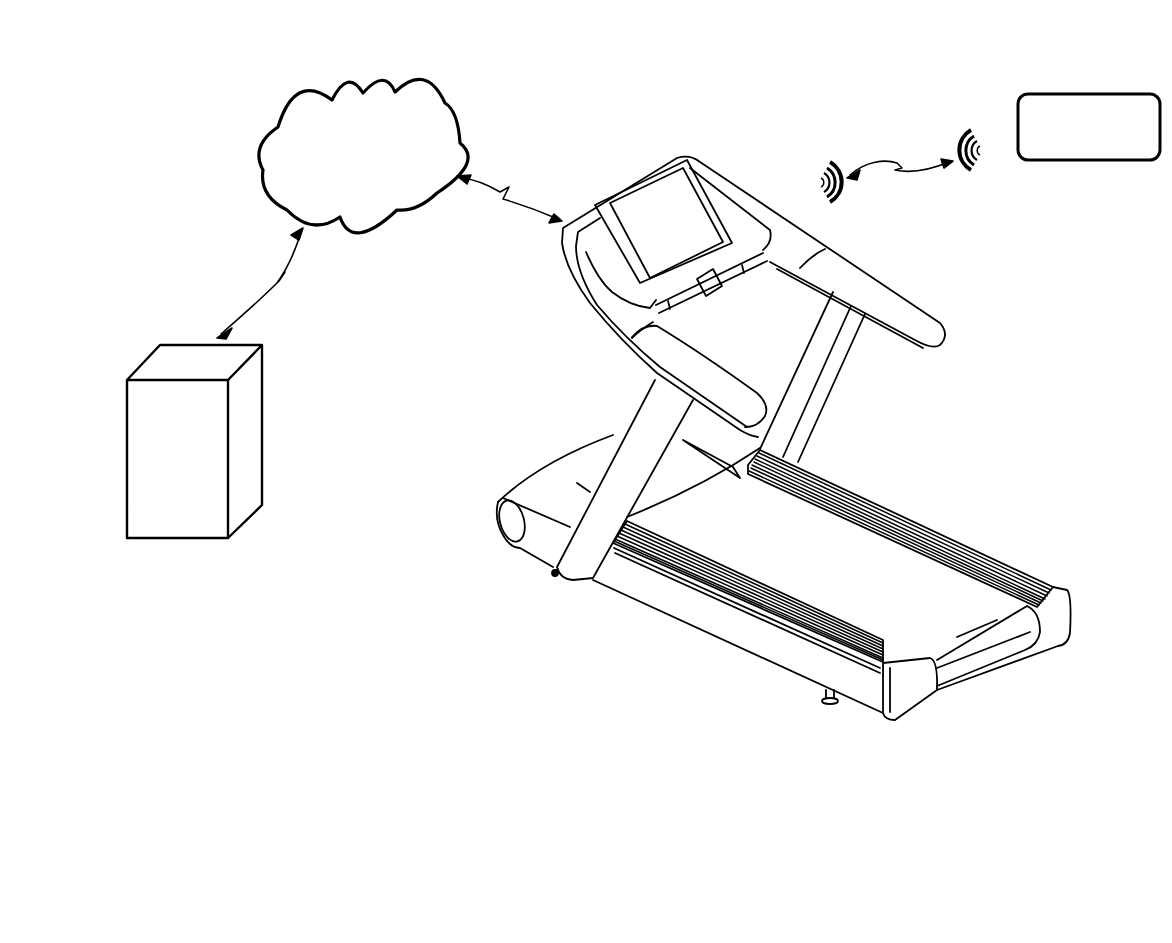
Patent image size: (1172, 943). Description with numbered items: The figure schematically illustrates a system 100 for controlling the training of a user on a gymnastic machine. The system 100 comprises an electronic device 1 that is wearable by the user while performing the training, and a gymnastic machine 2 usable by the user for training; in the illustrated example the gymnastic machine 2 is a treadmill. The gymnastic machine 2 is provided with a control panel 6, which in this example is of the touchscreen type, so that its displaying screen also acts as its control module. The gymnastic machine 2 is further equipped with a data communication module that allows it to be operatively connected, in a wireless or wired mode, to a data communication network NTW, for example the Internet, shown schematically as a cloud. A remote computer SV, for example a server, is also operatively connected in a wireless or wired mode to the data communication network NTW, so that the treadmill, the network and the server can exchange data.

The system for controlling the training of a user 100 is at (713, 54).
The electronic device 1 is at (1077, 142).
The gymnastic machine 2 is at (783, 438).
The control panel 6 is at (650, 238).
The data communication network NTW is at (334, 169).
The remote computer SV is at (196, 463).